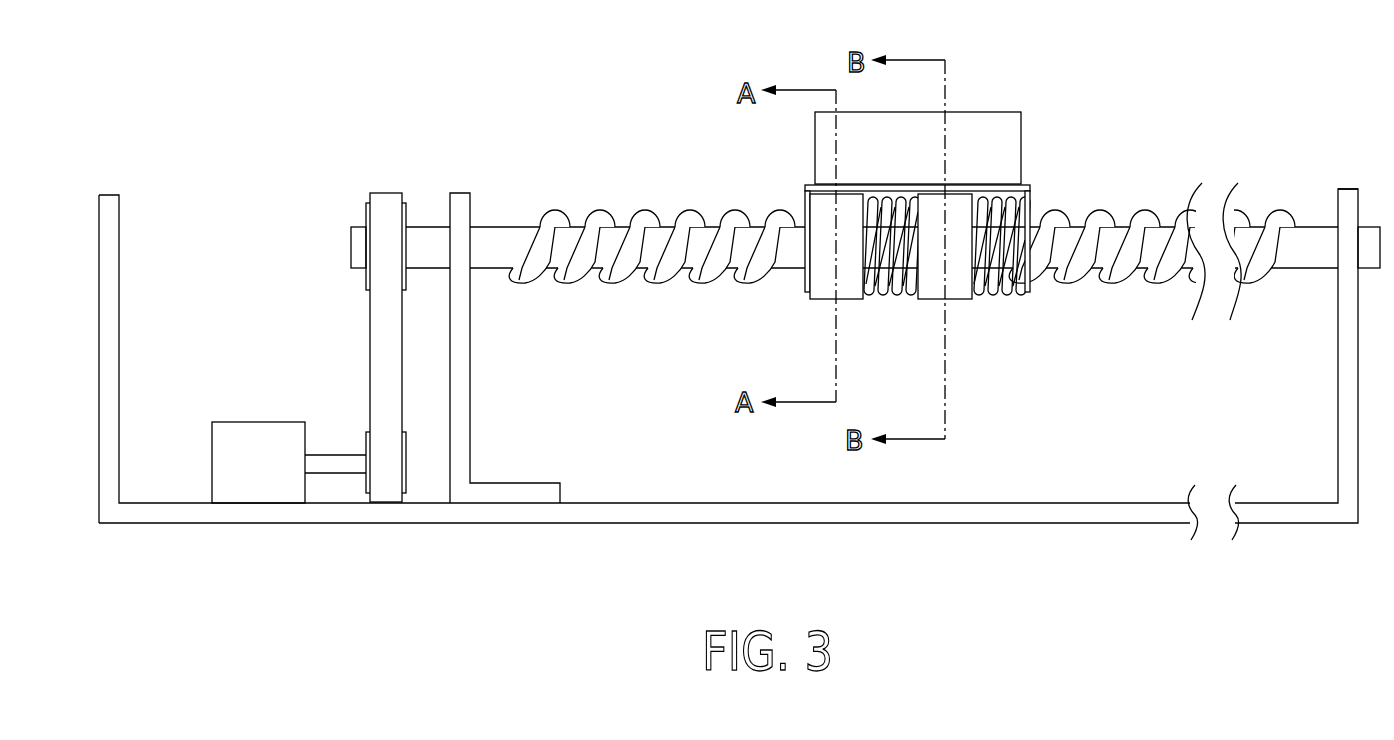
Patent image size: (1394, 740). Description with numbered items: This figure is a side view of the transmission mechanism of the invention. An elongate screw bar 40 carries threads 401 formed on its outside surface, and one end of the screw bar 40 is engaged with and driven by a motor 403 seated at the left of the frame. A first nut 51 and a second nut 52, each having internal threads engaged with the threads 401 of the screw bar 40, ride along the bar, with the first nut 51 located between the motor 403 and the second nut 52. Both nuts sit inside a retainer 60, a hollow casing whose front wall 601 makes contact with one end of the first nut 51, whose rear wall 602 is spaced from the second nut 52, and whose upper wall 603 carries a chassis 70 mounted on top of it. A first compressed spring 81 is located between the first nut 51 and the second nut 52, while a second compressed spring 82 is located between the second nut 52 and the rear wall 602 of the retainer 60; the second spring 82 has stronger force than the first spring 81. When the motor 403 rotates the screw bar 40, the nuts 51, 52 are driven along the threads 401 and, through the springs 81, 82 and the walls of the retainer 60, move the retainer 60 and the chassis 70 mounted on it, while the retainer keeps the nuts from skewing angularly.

The screw bar 40 is at (1318, 240).
The threads 401 is at (547, 230).
The motor 403 is at (252, 443).
The first nut 51 is at (825, 298).
The second nut 52 is at (960, 293).
The retainer 60 is at (949, 218).
The front wall 601 is at (805, 208).
The rear wall 602 is at (1033, 287).
The upper wall 603 is at (993, 185).
The chassis 70 is at (968, 125).
The first spring 81 is at (890, 293).
The second spring 82 is at (1000, 295).